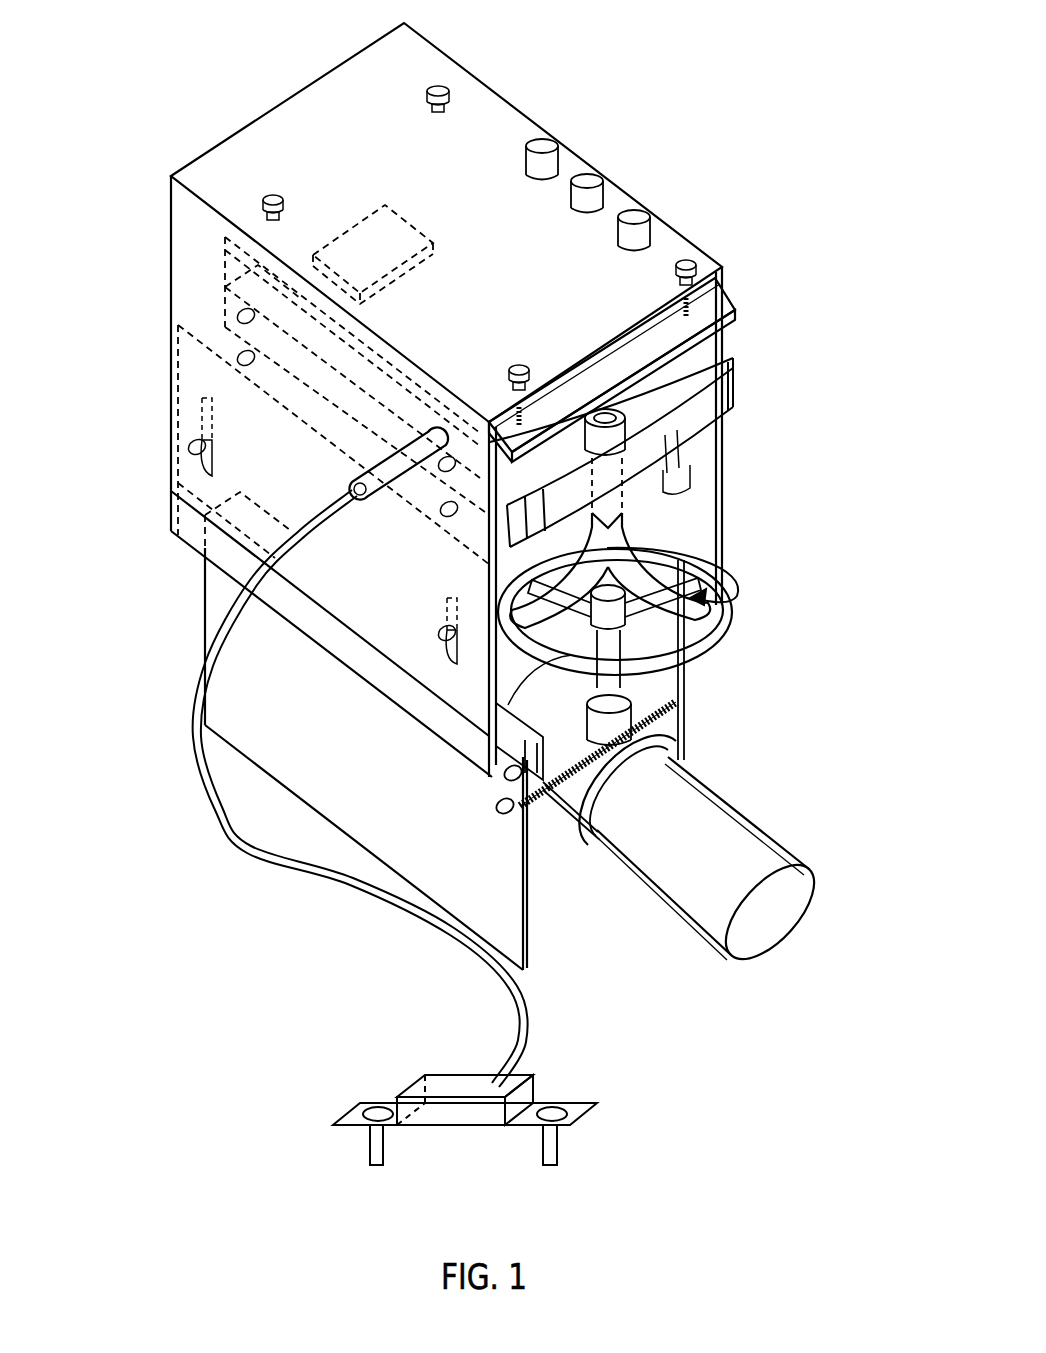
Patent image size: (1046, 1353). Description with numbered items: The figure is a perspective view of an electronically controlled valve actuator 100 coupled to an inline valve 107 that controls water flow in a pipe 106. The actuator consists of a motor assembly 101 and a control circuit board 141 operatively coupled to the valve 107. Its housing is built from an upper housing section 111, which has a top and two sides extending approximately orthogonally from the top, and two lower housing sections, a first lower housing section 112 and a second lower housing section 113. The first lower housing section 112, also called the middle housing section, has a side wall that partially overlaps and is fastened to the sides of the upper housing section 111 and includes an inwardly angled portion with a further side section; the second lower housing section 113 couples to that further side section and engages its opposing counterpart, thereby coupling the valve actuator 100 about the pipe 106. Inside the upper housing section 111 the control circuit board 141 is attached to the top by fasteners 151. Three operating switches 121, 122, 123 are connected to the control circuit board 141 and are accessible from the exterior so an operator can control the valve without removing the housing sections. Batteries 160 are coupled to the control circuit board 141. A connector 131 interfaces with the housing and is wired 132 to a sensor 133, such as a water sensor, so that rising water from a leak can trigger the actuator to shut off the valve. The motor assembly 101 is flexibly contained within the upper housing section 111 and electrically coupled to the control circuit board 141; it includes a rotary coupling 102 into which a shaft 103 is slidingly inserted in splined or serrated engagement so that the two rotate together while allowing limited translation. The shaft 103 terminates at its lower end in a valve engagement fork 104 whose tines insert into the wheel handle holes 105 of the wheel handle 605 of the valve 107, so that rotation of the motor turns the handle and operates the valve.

The valve actuator 100 is at (127, 343).
The motor assembly 101 is at (705, 372).
The rotary coupling 102 is at (700, 477).
The shaft 103 is at (700, 517).
The valve engagement fork 104 is at (700, 577).
The wheel handle holes 105 is at (705, 598).
The pipe 106 is at (720, 802).
The valve 107 is at (650, 728).
The upper housing section 111 is at (176, 243).
The first lower housing section 112 is at (178, 516).
The second lower housing section 113 is at (216, 598).
The operating switch 121 is at (545, 148).
The operating switch 122 is at (590, 183).
The operating switch 123 is at (636, 219).
The connector 131 is at (352, 482).
The wiring 132 is at (243, 850).
The sensor 133 is at (440, 1087).
The control circuit board 141 is at (728, 298).
The fasteners 151 is at (438, 84).
The batteries 160 is at (405, 253).
The wheel handle 605 is at (702, 634).